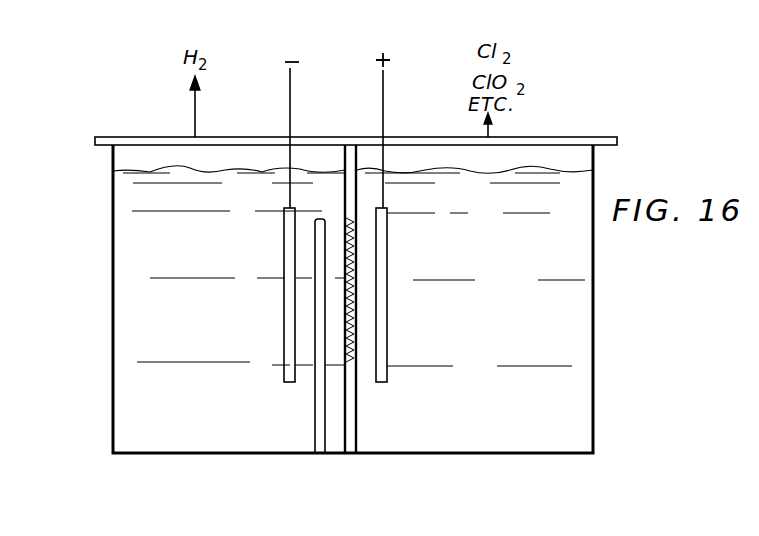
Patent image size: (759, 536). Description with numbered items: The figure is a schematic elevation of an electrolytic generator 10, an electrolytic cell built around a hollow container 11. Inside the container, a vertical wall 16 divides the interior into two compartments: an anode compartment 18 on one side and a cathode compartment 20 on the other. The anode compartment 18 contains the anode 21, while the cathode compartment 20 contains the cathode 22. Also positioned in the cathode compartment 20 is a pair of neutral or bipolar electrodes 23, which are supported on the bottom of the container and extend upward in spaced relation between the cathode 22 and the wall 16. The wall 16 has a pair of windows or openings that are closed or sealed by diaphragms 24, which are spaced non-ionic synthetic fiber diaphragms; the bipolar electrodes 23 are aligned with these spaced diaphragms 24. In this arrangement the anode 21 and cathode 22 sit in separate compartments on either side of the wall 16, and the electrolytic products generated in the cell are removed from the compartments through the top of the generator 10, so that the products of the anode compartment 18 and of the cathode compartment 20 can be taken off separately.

The electrolytic generator 10 is at (383, 299).
The hollow container 11 is at (597, 309).
The vertical wall 16 is at (375, 299).
The anode compartment 18 is at (590, 437).
The cathode compartment 20 is at (122, 431).
The anode 21 is at (388, 316).
The cathode 22 is at (284, 312).
The bipolar electrodes 23 is at (315, 421).
The diaphragms 24 is at (353, 360).